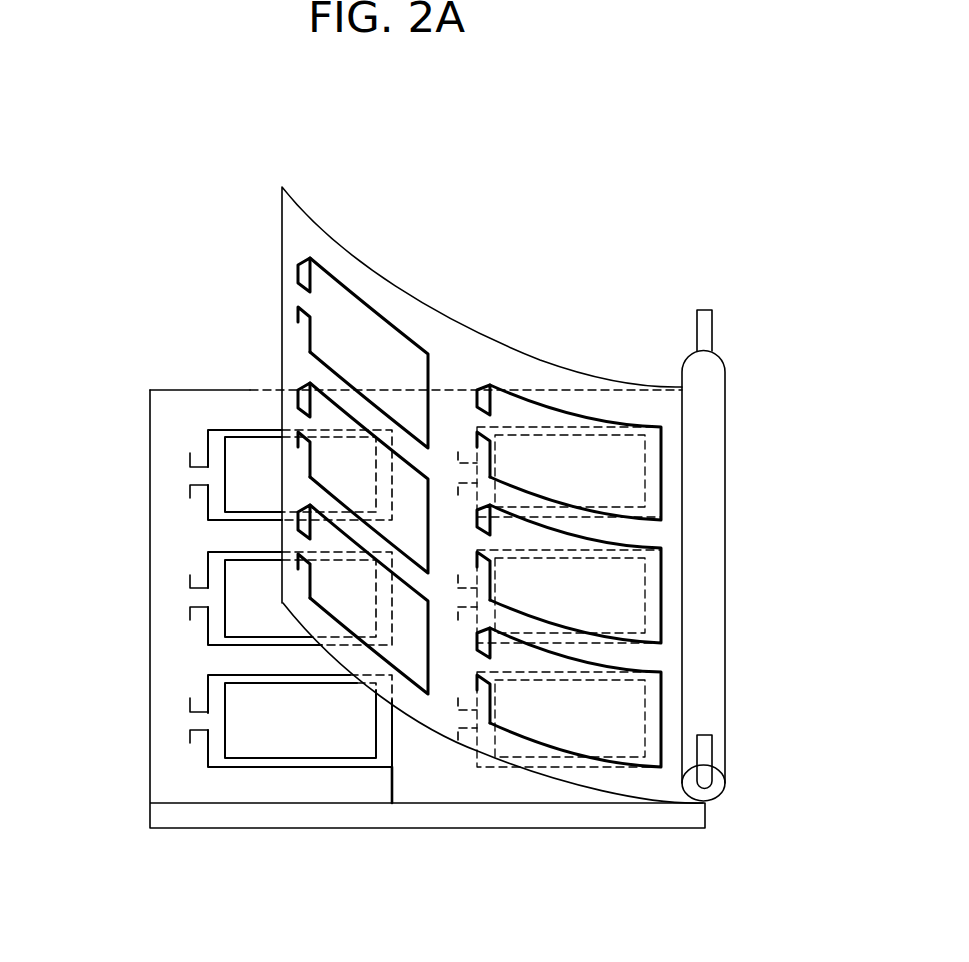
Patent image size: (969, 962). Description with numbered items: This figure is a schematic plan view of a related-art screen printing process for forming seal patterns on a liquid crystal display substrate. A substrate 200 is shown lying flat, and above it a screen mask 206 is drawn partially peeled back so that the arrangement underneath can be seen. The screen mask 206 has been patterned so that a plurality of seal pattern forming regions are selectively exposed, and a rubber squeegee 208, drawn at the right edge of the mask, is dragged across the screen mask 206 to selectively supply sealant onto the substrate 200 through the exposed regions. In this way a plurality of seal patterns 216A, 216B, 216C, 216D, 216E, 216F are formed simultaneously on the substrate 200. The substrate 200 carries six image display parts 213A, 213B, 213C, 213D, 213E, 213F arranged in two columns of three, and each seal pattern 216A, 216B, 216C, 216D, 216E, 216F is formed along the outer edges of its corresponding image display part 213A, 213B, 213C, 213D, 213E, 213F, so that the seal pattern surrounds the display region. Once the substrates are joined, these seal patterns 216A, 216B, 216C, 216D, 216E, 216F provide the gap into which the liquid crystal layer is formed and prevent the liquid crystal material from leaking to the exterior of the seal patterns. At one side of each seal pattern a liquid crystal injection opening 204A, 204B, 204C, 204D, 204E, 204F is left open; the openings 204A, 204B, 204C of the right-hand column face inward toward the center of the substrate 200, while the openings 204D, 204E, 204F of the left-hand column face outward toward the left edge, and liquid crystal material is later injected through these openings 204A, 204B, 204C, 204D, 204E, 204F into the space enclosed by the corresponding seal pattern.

The substrate 200 is at (687, 817).
The screen mask 206 is at (320, 228).
The rubber squeegee 208 is at (712, 377).
The image display part 213A is at (615, 486).
The image display part 213B is at (615, 608).
The image display part 213C is at (615, 737).
The image display part 213D is at (277, 489).
The image display part 213E is at (277, 611).
The image display part 213F is at (277, 733).
The seal pattern 216A is at (550, 427).
The seal pattern 216B is at (550, 550).
The seal pattern 216C is at (550, 672).
The seal pattern 216D is at (207, 441).
The seal pattern 216E is at (207, 562).
The seal pattern 216F is at (207, 684).
The liquid crystal injection opening 204A is at (455, 473).
The liquid crystal injection opening 204B is at (455, 599).
The liquid crystal injection opening 204C is at (455, 721).
The liquid crystal injection opening 204D is at (184, 473).
The liquid crystal injection opening 204E is at (184, 594).
The liquid crystal injection opening 204F is at (184, 718).